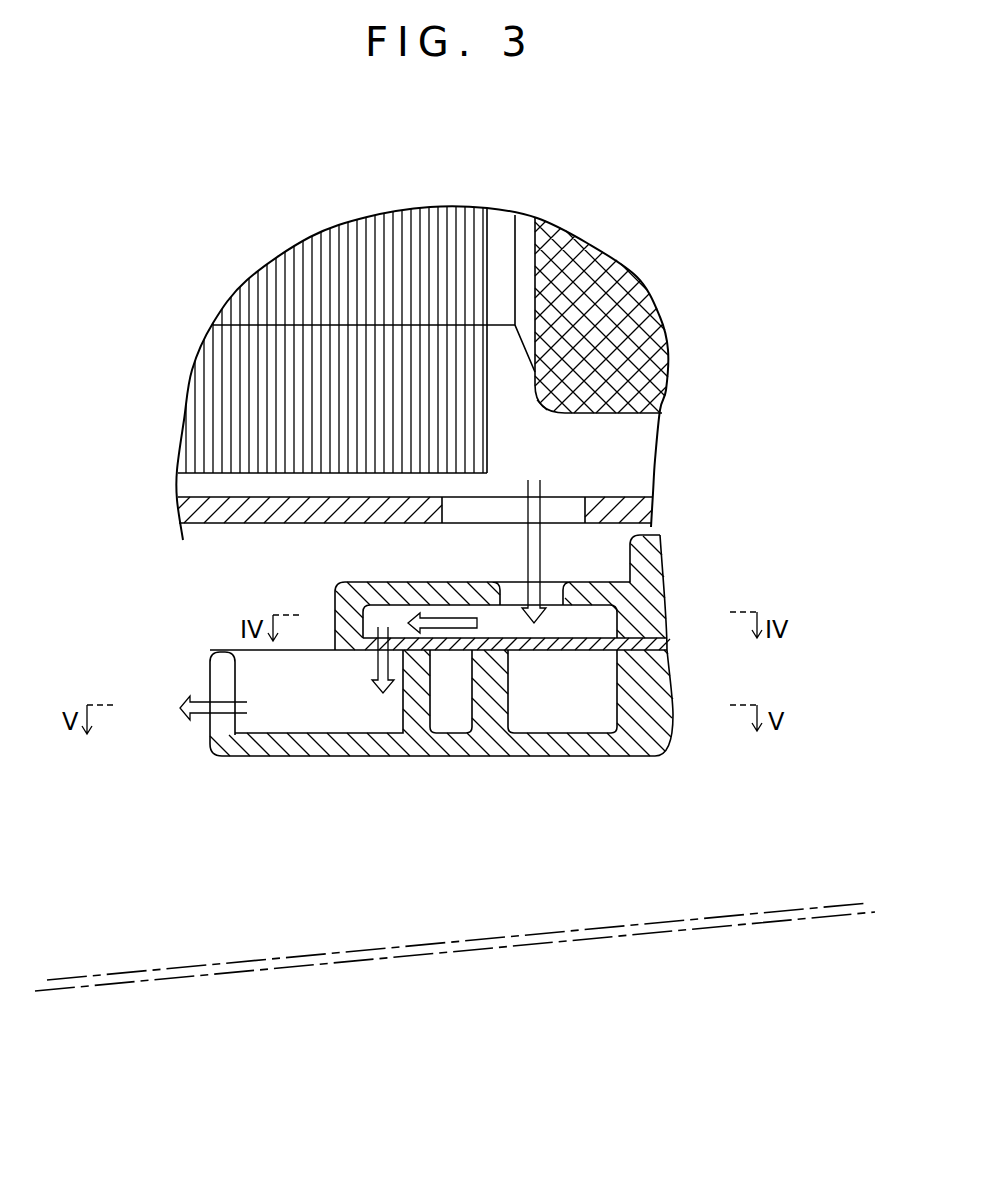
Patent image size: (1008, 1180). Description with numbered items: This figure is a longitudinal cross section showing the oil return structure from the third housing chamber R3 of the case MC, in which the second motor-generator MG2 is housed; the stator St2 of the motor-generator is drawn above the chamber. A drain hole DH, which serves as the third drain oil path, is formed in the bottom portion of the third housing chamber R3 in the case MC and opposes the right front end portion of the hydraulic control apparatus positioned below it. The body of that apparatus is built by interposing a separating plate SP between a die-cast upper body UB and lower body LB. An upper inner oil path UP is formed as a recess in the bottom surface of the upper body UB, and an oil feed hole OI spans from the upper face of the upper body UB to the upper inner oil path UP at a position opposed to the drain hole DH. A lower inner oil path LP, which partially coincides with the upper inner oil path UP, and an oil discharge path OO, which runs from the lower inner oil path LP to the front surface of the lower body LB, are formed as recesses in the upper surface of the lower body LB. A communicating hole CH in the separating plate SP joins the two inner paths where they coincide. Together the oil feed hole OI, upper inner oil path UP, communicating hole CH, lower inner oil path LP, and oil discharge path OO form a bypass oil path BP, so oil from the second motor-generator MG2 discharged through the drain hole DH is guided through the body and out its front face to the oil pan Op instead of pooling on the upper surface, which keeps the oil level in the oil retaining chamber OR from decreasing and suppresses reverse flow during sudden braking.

The stator St2 is at (487, 440).
The second motor-generator MG2 is at (633, 423).
The third housing chamber R3 is at (262, 487).
The case MC is at (218, 540).
The drain hole DH is at (472, 508).
The oil feed hole OI is at (515, 592).
The upper body UB is at (340, 604).
The bypass oil path BP is at (562, 577).
The upper inner oil path UP is at (603, 622).
The lower body LB is at (312, 752).
The lower inner oil path LP is at (375, 718).
The communicating hole CH is at (372, 650).
The separating plate SP is at (575, 650).
The oil discharge path OO is at (222, 683).
The oil retaining chamber OR is at (186, 845).
The oil pan Op is at (527, 947).